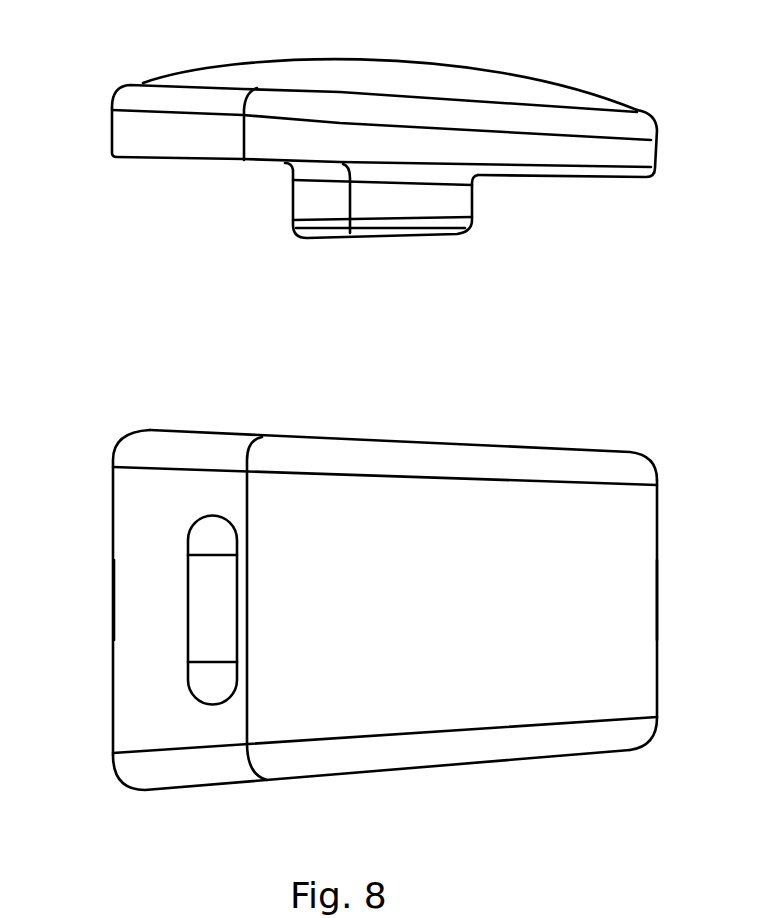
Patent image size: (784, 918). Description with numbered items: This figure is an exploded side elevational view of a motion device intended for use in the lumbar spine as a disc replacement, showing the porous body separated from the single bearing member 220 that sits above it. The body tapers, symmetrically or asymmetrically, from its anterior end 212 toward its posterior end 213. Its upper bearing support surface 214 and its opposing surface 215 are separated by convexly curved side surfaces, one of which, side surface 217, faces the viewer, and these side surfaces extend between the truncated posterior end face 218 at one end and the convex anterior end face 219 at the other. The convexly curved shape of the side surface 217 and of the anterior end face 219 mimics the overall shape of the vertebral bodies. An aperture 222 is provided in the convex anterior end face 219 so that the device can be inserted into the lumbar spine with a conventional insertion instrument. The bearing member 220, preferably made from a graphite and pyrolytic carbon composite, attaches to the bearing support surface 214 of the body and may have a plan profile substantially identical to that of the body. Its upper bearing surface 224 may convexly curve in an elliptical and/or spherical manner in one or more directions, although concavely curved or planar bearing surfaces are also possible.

The anterior end 212 is at (110, 582).
The posterior end 213 is at (670, 600).
The bearing support surface 214 is at (443, 442).
The opposing surface 215 is at (473, 765).
The convexly curved side surface 217 is at (580, 683).
The truncated posterior end face 218 is at (662, 558).
The convex anterior end face 219 is at (122, 625).
The bearing member 220 is at (657, 130).
The aperture 222 is at (217, 675).
The bearing surface 224 is at (443, 67).